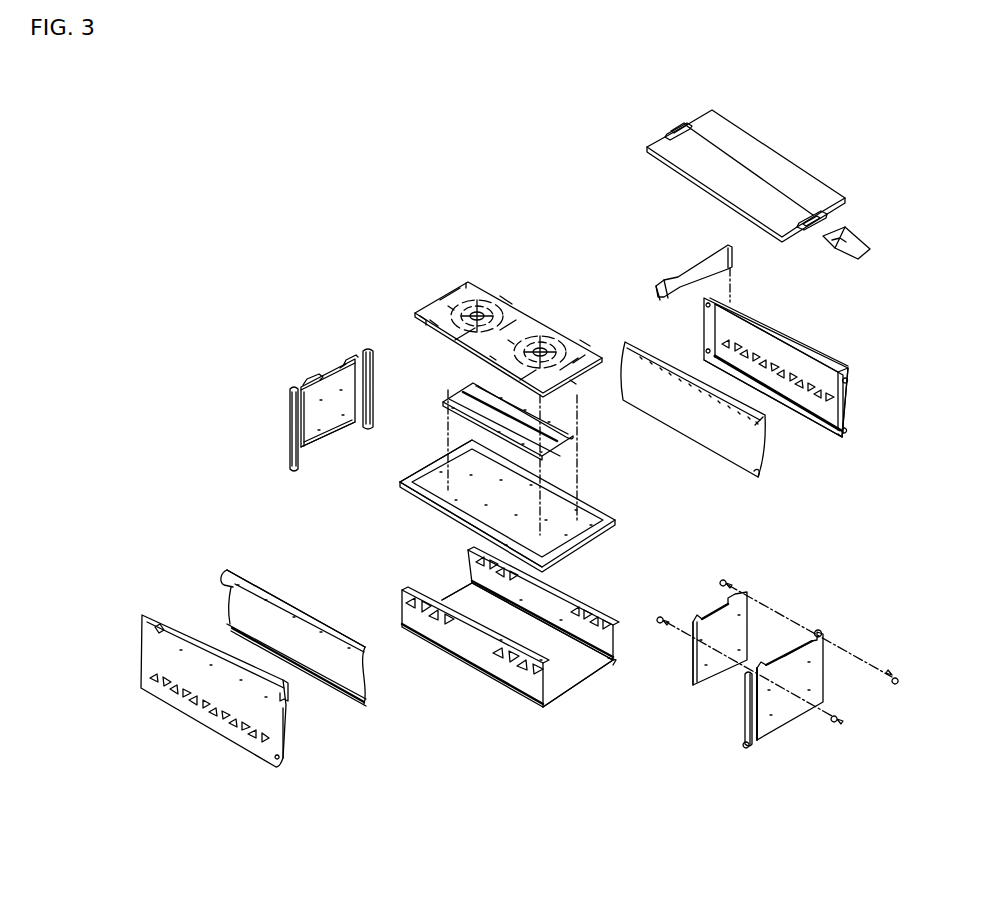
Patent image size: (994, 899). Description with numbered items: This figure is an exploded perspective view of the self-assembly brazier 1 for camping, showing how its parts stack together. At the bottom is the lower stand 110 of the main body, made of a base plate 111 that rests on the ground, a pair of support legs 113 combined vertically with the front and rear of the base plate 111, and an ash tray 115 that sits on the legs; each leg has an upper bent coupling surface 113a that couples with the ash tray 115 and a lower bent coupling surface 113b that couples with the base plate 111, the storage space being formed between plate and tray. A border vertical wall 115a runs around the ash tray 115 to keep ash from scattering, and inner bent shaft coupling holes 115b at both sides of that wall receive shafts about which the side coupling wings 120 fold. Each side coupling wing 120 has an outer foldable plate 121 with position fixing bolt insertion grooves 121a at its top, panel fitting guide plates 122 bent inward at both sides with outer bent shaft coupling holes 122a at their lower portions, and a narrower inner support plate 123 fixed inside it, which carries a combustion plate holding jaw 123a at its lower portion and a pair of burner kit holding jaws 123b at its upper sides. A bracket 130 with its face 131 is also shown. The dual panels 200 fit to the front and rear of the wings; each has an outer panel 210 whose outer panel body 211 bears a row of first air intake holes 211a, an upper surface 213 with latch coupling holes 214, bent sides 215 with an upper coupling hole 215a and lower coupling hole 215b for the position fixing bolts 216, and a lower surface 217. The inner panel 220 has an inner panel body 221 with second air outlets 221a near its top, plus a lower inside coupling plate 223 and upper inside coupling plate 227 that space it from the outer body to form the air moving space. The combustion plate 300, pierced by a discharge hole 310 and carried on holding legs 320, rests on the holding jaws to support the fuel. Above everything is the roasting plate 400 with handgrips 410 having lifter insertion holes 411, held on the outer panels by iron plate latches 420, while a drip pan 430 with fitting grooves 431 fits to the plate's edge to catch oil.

The self-assembly brazier for camping 1 is at (160, 262).
The lower stand 110 is at (473, 686).
The base plate 111 is at (560, 681).
The support legs 113 is at (462, 648).
The upper bent coupling surface 113a is at (598, 619).
The lower bent coupling surface 113b is at (614, 666).
The ash tray 115 is at (584, 522).
The border vertical wall 115a is at (455, 518).
The inner bent shaft coupling holes 115b is at (417, 474).
The side coupling wings 120 is at (302, 370).
The outer foldable plate 121 is at (818, 674).
The position fixing bolt insertion grooves 121a is at (822, 634).
The panel fitting guide plates 122 is at (750, 710).
The outer bent shaft coupling holes 122a is at (748, 744).
The inner support plate 123 is at (318, 410).
The combustion plate holding jaw 123a is at (326, 448).
The burner kit holding jaws 123b is at (734, 598).
The support bracket 130 is at (462, 396).
The support bracket face 131 is at (456, 418).
The dual panels 200 is at (122, 579).
The outer panel 210 is at (864, 369).
The outer panel body 211 is at (821, 382).
The first air intake holes 211a is at (784, 372).
The upper surface 213 is at (765, 318).
The latch coupling holes 214 is at (156, 622).
The sides 215 is at (848, 396).
The upper coupling hole 215a is at (850, 377).
The lower coupling hole 215b is at (848, 431).
The position fixing bolts 216 is at (838, 721).
The lower surface 217 is at (822, 431).
The inner panel 220 is at (343, 710).
The inner panel body 221 is at (656, 404).
The second air outlets 221a is at (740, 423).
The lower inside coupling plate 223 is at (228, 628).
The upper inside coupling plate 227 is at (246, 575).
The combustion plate 300 is at (412, 296).
The discharge hole 310 is at (482, 300).
The holding legs 320 is at (426, 334).
The roasting plate 400 is at (760, 157).
The handgrips 410 is at (669, 128).
The lifter insertion hole 411 is at (674, 129).
The iron plate latches 420 is at (672, 281).
The drip pan 430 is at (858, 242).
The fitting grooves 431 is at (853, 234).